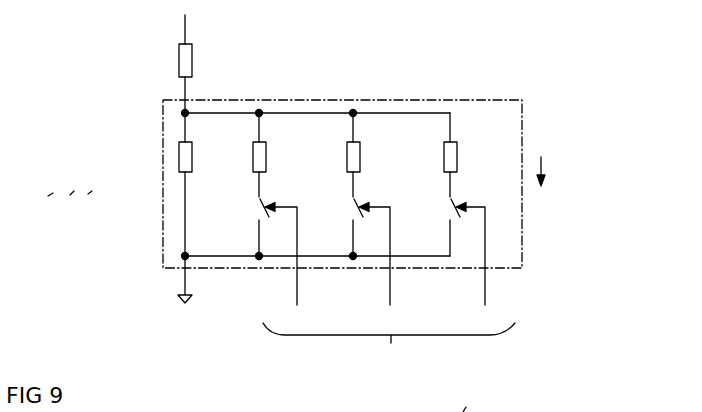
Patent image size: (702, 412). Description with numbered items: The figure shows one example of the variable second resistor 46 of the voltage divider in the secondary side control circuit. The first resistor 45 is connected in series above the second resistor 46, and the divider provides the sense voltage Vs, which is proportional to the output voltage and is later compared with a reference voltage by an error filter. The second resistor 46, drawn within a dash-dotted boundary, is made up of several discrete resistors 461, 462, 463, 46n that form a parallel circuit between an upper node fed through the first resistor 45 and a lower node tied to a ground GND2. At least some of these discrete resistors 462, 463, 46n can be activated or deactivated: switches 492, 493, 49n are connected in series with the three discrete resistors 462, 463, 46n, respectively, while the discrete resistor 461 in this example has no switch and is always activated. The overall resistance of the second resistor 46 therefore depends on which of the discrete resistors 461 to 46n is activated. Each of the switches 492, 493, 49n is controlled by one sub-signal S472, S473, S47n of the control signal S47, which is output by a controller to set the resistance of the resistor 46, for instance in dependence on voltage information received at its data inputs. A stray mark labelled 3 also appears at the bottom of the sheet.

The first resistor 45 is at (194, 63).
The second resistor 46 is at (376, 100).
The discrete resistor 461 is at (196, 146).
The discrete resistor 462 is at (270, 146).
The discrete resistor 463 is at (364, 146).
The discrete resistor 46n is at (461, 146).
The switch 492 is at (258, 207).
The switch 493 is at (352, 207).
The switch 49n is at (449, 207).
The sub-signal S472 is at (291, 266).
The sub-signal S473 is at (384, 266).
The sub-signal S47n is at (481, 266).
The control signal S47 is at (389, 347).
The second ground GND2 is at (184, 291).
The sense voltage Vs is at (552, 171).
The reference 3 is at (469, 397).